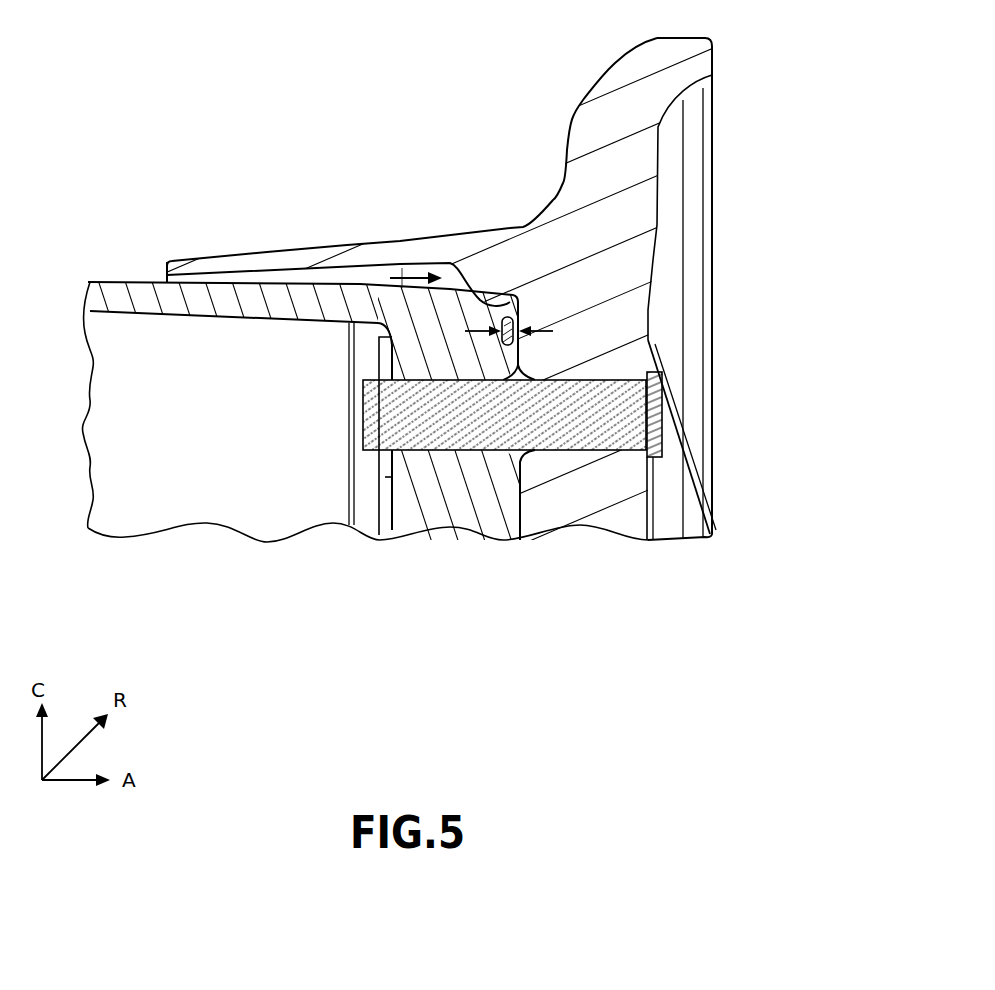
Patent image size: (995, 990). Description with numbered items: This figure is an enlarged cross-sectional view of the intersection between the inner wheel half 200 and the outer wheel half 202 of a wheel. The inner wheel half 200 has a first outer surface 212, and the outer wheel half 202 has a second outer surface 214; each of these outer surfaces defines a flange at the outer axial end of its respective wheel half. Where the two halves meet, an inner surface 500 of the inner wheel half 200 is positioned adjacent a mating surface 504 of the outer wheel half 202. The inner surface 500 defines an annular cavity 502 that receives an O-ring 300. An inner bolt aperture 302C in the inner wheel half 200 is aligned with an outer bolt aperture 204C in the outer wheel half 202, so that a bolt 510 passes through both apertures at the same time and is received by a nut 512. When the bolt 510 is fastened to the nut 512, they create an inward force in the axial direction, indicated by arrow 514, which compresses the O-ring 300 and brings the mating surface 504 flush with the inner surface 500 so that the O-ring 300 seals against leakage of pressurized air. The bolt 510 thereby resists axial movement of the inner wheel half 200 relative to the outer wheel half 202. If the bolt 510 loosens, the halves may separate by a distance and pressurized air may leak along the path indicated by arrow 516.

The inner wheel half 200 is at (120, 282).
The outer wheel half 202 is at (643, 151).
The first outer surface 212 is at (160, 283).
The second outer surface 214 is at (267, 252).
The O-ring 300 is at (509, 300).
The inner bolt aperture 302C is at (437, 425).
The outer bolt aperture 204C is at (600, 425).
The inner surface 500 is at (503, 350).
The annular cavity 502 is at (467, 325).
The mating surface 504 is at (647, 380).
The bolt 510 is at (655, 460).
The nut 512 is at (386, 478).
The arrow 514 is at (553, 320).
The arrow 516 is at (418, 274).